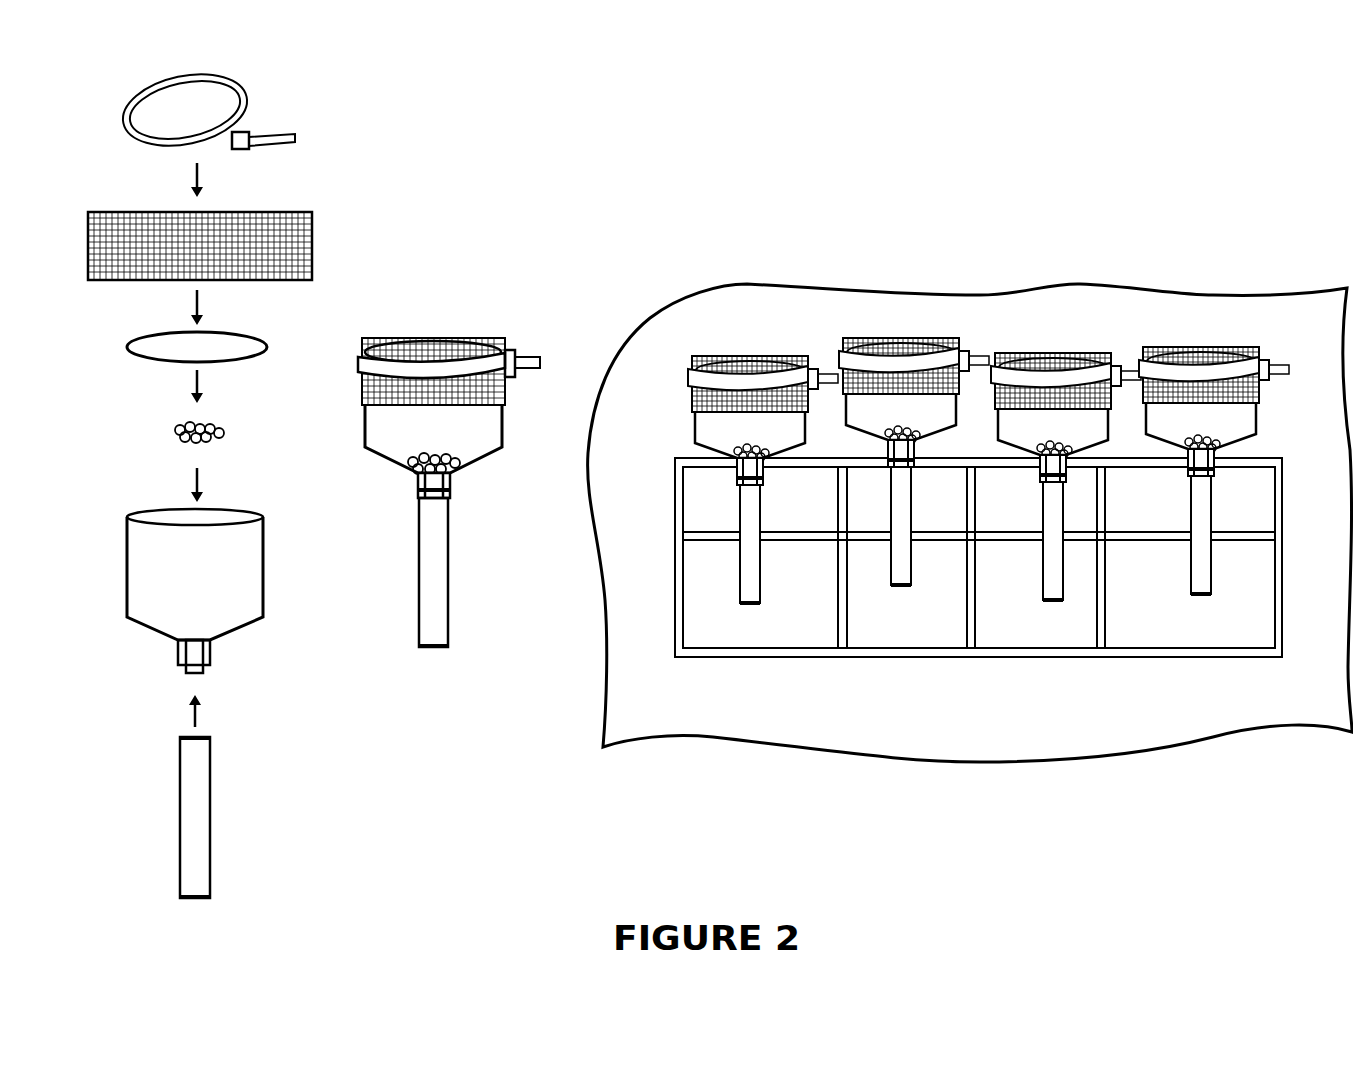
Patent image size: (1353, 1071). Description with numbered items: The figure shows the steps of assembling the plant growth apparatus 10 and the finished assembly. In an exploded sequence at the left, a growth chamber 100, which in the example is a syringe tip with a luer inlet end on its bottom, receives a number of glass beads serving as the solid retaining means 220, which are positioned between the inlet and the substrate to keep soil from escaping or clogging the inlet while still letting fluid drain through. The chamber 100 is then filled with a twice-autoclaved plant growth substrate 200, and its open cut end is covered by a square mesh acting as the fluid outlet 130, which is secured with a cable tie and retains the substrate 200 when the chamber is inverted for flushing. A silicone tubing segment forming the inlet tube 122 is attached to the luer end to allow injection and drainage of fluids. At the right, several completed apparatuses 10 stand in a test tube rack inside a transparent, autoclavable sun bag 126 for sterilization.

The plant growth apparatus 10 is at (452, 326).
The growth chamber 100 is at (265, 570).
The inlet tube 122 is at (210, 800).
The sun bag 126 is at (1272, 317).
The fluid outlet 130 is at (293, 212).
The plant growth substrate 200 is at (265, 345).
The solid retaining means 220 is at (224, 433).